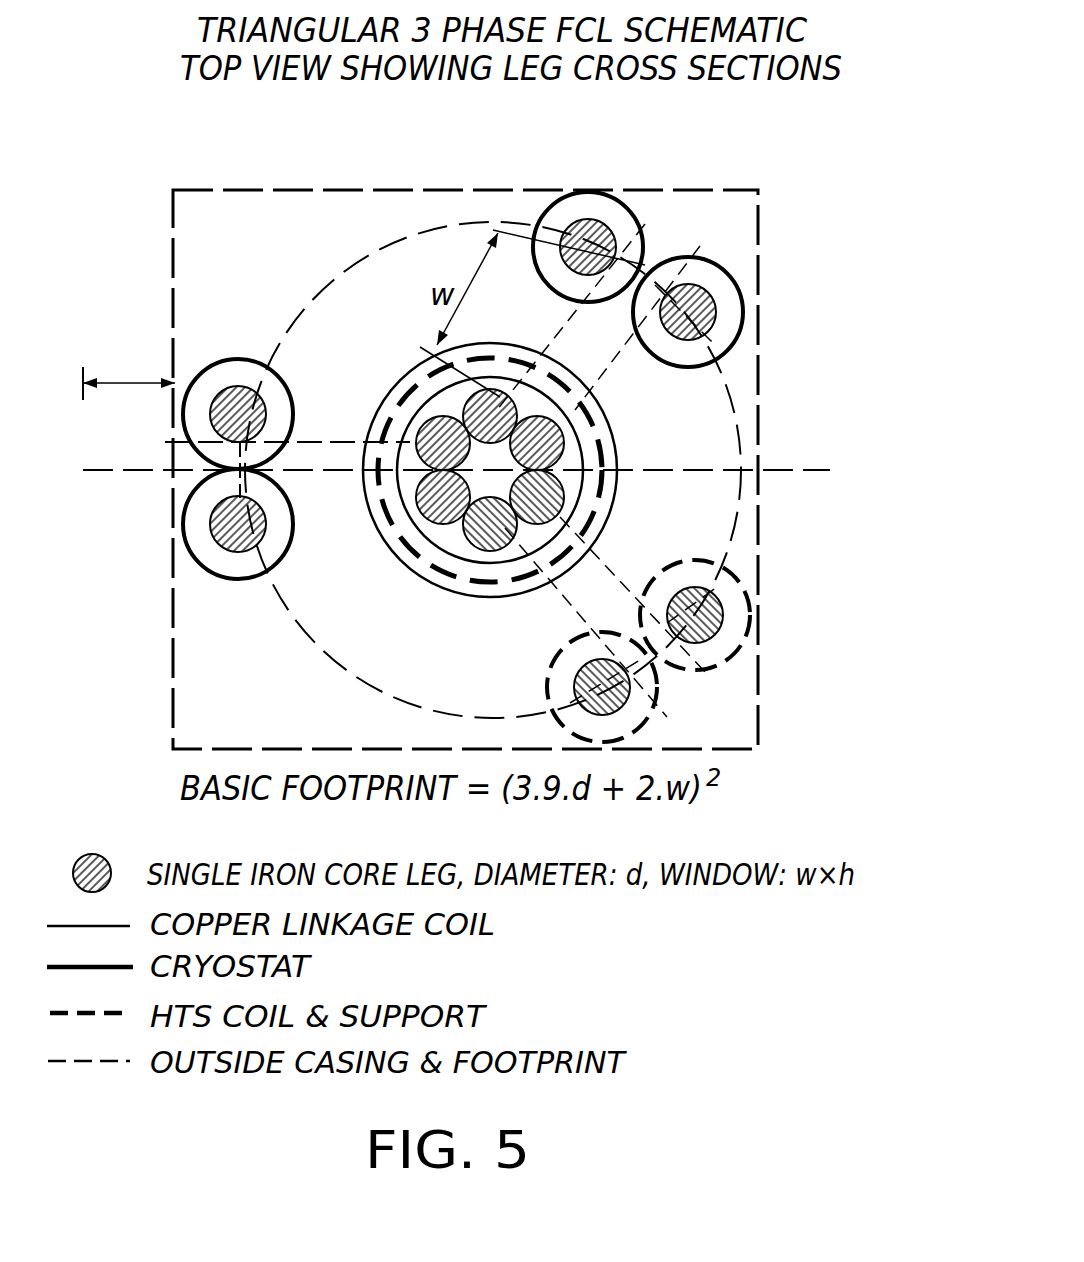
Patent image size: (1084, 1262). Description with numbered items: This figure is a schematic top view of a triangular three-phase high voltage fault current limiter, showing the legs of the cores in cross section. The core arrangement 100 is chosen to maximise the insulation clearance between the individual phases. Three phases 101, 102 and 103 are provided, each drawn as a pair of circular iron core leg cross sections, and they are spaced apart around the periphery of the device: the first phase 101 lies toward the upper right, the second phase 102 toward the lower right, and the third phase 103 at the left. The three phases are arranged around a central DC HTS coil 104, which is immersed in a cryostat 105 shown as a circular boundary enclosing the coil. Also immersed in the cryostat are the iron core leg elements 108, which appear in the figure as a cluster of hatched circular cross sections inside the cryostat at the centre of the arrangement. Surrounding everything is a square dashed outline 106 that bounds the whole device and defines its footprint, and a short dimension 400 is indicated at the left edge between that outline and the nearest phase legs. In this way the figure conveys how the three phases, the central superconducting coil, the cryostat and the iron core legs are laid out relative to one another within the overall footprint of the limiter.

The arrangement 100 is at (828, 213).
The first phase 101 is at (650, 218).
The second phase 102 is at (712, 693).
The third phase 103 is at (165, 490).
The DC HTS coil 104 is at (600, 425).
The cryostat 105 is at (620, 457).
The outside casing and footprint 106 is at (758, 508).
The iron core leg elements 108 is at (418, 512).
The spacing dimension 400 is at (129, 373).